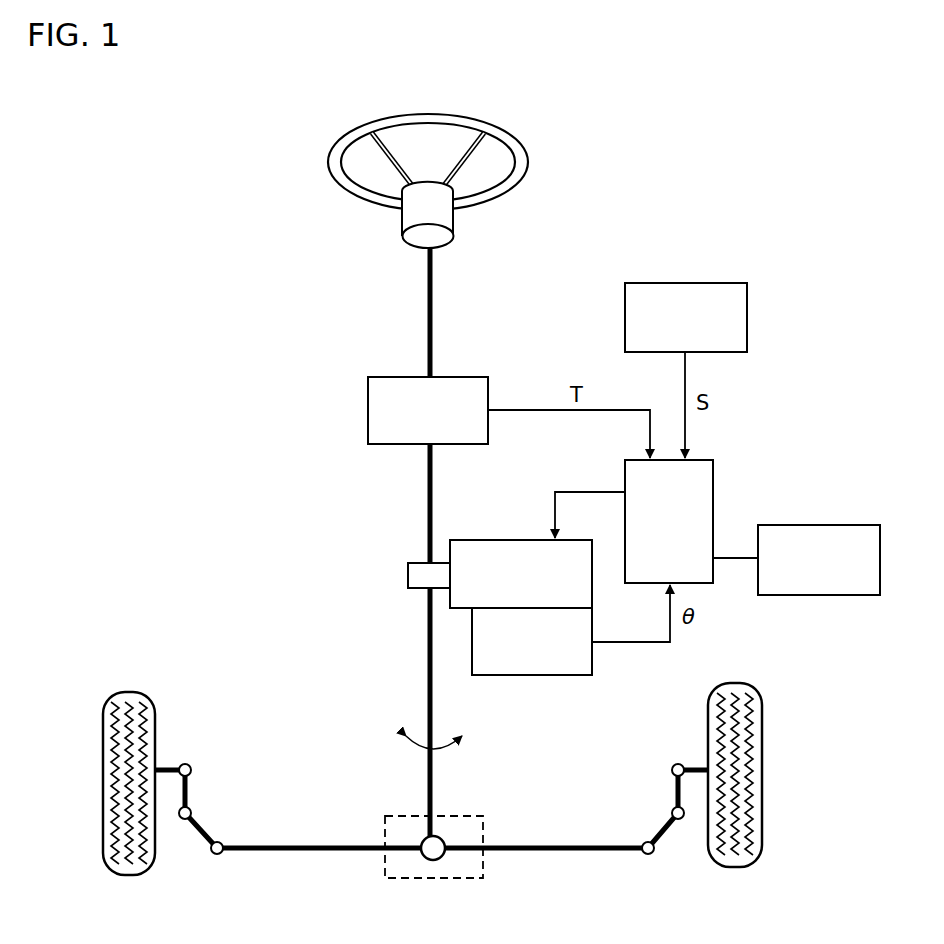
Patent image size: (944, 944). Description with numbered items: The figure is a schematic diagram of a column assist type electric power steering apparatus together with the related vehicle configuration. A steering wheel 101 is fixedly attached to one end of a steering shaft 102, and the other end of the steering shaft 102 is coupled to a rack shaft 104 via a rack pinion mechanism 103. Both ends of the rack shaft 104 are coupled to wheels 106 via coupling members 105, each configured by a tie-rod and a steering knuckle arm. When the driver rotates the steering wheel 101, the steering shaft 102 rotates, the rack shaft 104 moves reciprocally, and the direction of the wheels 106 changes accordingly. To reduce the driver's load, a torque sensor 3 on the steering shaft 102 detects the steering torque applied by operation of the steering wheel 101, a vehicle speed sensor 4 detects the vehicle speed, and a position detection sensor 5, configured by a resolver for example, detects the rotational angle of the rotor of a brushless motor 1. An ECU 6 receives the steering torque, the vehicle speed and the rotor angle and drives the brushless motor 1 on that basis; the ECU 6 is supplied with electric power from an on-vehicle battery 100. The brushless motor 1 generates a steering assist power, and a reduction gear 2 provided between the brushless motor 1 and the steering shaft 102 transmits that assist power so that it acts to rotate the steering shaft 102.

The brushless motor 1 is at (513, 538).
The reduction gear 2 is at (418, 563).
The torque sensor 3 is at (368, 412).
The vehicle speed sensor 4 is at (687, 280).
The position detection sensor 5 is at (532, 676).
The electronic control unit (ECU) 6 is at (713, 486).
The on-vehicle battery 100 is at (822, 596).
The steering wheel 101 is at (527, 160).
The steering shaft 102 is at (426, 314).
The rack pinion mechanism 103 is at (438, 880).
The rack shaft 104 is at (560, 852).
The coupling member 105 is at (220, 812).
The wheel 106 is at (131, 876).